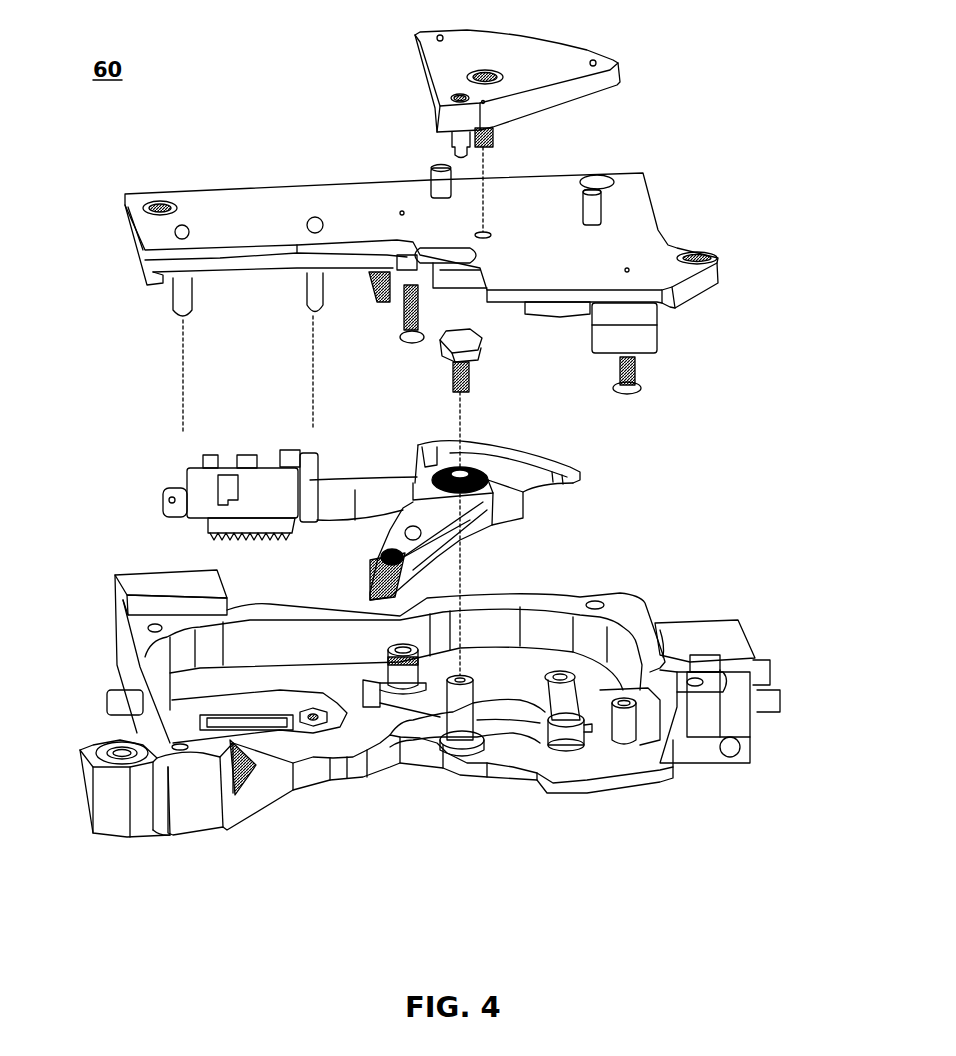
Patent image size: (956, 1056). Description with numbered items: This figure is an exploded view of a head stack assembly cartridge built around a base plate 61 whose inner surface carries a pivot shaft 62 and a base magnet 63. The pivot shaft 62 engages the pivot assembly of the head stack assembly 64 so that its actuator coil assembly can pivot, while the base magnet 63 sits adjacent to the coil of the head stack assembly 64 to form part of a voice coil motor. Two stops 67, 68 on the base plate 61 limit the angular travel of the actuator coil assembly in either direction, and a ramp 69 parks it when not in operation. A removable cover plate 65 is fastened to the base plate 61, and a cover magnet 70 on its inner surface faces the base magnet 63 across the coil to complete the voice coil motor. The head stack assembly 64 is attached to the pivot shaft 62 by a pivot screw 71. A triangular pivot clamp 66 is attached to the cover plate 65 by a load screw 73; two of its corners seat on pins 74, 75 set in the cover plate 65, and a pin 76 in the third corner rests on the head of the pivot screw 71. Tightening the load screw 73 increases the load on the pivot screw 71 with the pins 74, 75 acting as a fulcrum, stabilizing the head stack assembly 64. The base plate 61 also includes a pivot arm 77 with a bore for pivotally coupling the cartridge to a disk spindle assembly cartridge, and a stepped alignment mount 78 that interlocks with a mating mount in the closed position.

The base plate 61 is at (620, 597).
The pivot shaft 62 is at (457, 737).
The base magnet 63 is at (533, 707).
The head stack assembly 64 is at (592, 467).
The cover plate 65 is at (250, 215).
The pivot clamp 66 is at (518, 68).
The stop 67 is at (563, 750).
The stop 68 is at (400, 652).
The ramp 69 is at (248, 760).
The cover magnet 70 is at (562, 311).
The pivot screw 71 is at (452, 345).
The load screw 73 is at (468, 77).
The pin 74 is at (437, 168).
The pin 75 is at (597, 185).
The pin 76 is at (462, 157).
The pivot arm 77 is at (115, 752).
The alignment mount 78 is at (745, 732).